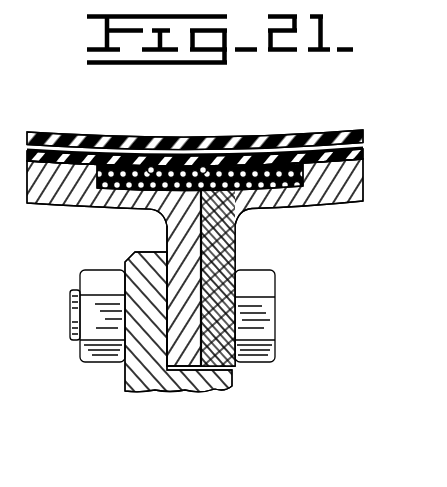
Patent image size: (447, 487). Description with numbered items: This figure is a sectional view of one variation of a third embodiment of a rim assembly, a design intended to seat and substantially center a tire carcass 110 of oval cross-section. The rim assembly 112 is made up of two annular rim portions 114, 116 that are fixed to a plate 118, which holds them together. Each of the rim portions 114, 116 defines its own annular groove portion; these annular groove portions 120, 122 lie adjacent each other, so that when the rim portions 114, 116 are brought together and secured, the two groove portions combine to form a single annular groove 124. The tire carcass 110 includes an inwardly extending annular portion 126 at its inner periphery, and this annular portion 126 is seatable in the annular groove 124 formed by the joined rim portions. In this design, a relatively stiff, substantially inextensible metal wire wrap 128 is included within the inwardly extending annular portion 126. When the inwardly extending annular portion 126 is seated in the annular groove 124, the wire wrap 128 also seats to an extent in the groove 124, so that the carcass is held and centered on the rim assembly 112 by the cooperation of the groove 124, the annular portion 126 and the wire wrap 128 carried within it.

The tire carcass 110 is at (323, 138).
The rim assembly 112 is at (333, 225).
The annular rim portion 114 is at (103, 197).
The annular rim portion 116 is at (348, 205).
The plate 118 is at (140, 387).
The annular groove portion 120 is at (112, 163).
The annular groove portion 122 is at (282, 162).
The annular groove 124 is at (151, 165).
The inwardly extending annular portion 126 is at (203, 165).
The metal wire wrap 128 is at (277, 182).